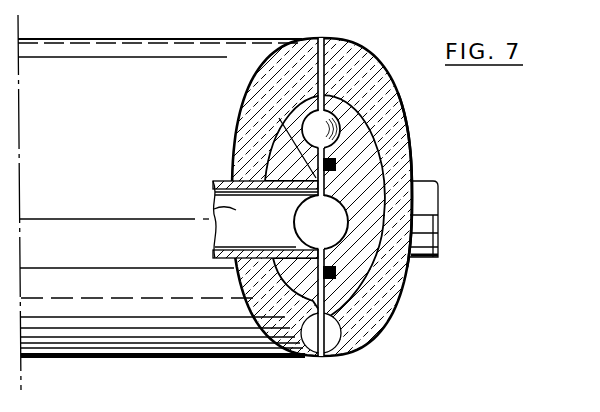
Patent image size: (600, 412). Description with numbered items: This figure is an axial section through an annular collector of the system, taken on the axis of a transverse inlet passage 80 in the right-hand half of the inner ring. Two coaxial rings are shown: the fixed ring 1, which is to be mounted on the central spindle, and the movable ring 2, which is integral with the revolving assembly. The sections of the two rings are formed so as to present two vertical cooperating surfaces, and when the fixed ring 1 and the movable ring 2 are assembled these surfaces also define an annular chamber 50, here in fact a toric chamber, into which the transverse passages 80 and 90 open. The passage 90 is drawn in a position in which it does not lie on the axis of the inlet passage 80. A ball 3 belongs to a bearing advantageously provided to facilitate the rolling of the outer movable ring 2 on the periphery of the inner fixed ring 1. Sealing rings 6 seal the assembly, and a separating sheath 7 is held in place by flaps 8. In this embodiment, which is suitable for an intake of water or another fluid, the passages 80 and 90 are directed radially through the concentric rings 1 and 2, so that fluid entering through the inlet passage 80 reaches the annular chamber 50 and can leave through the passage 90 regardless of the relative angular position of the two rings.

The fixed ring 1 is at (236, 116).
The movable ring 2 is at (412, 137).
The ball 3 is at (339, 128).
The sealing rings 6 is at (337, 164).
The separating sheath 7 is at (358, 92).
The flaps 8 is at (313, 36).
The annular chamber 50 is at (313, 231).
The transverse inlet passage 80 is at (213, 207).
The transverse passage 90 is at (434, 197).